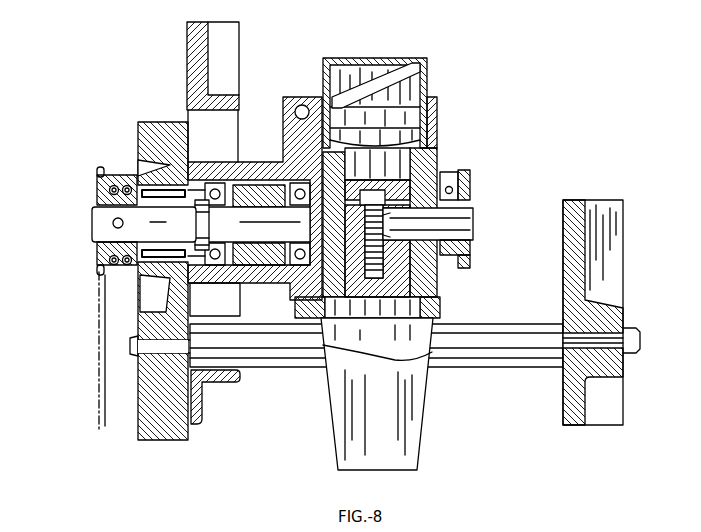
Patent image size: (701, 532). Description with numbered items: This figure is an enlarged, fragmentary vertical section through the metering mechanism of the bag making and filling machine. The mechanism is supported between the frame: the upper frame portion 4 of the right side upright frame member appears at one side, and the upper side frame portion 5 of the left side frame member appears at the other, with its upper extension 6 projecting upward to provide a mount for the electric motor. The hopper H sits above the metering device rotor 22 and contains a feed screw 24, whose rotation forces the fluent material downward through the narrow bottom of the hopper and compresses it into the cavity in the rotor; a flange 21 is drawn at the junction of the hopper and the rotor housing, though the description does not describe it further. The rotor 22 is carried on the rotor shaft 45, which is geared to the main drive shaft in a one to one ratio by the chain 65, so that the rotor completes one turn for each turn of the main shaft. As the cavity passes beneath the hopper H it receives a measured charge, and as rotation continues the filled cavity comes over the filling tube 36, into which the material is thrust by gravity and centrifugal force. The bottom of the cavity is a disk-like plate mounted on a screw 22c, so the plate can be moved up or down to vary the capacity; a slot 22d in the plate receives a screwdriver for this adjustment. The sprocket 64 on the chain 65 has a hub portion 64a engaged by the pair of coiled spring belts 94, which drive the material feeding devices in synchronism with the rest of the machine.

The upper frame portion 4 is at (575, 247).
The upper side frame portion 5 is at (160, 428).
The upper extension 6 is at (190, 66).
The hopper H is at (328, 55).
The flange 21 is at (437, 140).
The metering device rotor 22 is at (437, 165).
The screw 22c is at (383, 248).
The slot 22d is at (470, 178).
The feed screw 24 is at (412, 62).
The filling tube 36 is at (410, 418).
The rotor shaft 45 is at (100, 222).
The sprocket 64 is at (102, 250).
The hub portion 64a is at (100, 190).
The chain 65 is at (99, 312).
The coiled spring belts 94 is at (118, 186).